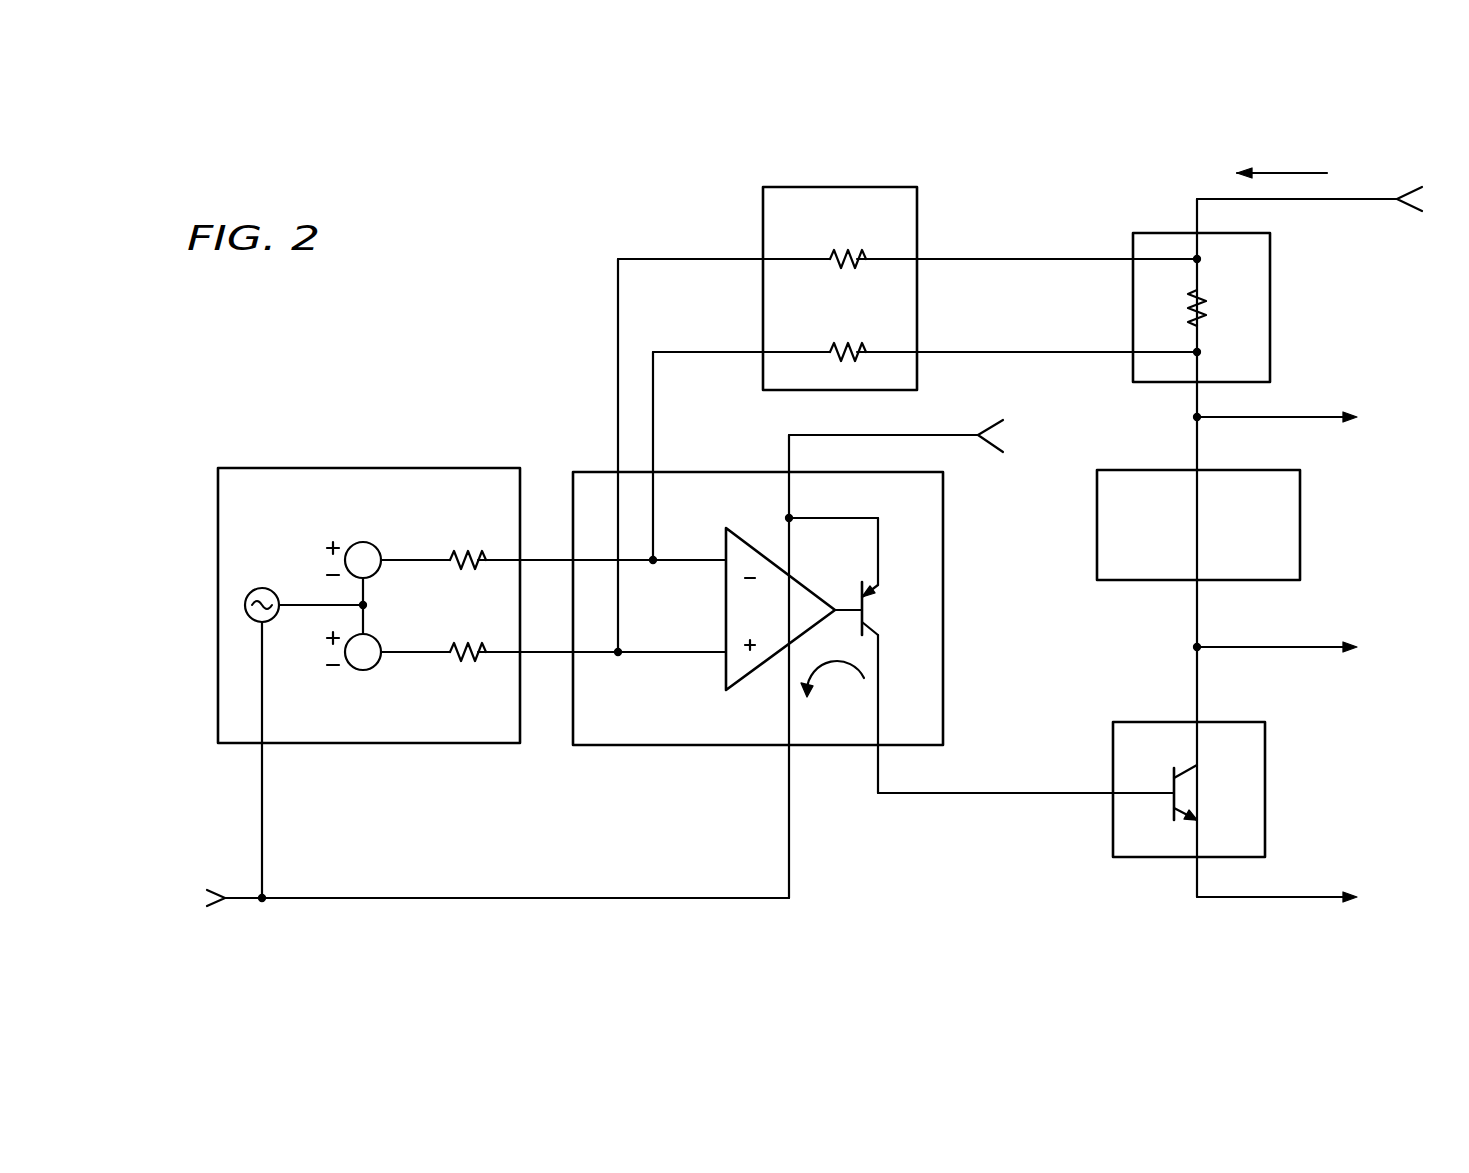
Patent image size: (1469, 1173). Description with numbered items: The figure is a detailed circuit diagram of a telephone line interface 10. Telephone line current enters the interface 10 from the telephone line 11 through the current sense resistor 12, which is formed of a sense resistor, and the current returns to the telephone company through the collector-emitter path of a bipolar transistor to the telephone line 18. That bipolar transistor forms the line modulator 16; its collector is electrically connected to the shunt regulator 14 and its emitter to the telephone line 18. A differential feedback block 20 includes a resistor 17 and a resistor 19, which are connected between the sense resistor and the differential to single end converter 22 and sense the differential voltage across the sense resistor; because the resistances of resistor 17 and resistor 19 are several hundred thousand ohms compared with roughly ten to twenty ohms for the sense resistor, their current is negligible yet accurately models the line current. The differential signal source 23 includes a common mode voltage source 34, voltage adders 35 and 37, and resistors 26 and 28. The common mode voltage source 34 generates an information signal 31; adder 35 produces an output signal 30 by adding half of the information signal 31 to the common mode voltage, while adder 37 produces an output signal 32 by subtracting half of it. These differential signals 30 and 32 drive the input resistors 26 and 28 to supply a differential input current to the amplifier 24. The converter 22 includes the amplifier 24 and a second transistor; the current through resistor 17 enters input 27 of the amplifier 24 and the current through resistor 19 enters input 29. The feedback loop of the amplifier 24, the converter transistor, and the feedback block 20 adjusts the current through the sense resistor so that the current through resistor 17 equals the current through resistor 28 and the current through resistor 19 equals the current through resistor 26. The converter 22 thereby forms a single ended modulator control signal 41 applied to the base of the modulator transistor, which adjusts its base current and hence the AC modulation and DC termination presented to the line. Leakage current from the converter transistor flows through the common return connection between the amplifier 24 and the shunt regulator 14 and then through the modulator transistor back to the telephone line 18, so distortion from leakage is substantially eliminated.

The telephone line interface 10 is at (378, 342).
The telephone line 11 is at (1358, 207).
The current sense resistor 12 is at (1133, 305).
The shunt regulator 14 is at (1262, 558).
The line modulator 16 is at (1266, 812).
The resistor 17 is at (847, 254).
The telephone line 18 is at (1272, 898).
The resistor 19 is at (847, 348).
The differential feedback block 20 is at (763, 210).
The differential to single end converter 22 is at (640, 746).
The differential signal source 23 is at (360, 745).
The amplifier 24 is at (787, 618).
The resistor 26 is at (462, 556).
The input 27 is at (691, 649).
The resistor 28 is at (460, 668).
The input 29 is at (691, 557).
The output signal 30 is at (408, 559).
The information signal 31 is at (300, 604).
The output signal 32 is at (406, 665).
The common mode voltage source 34 is at (262, 586).
The voltage adder 35 is at (363, 542).
The voltage adder 37 is at (363, 672).
The modulator control signal 41 is at (970, 794).